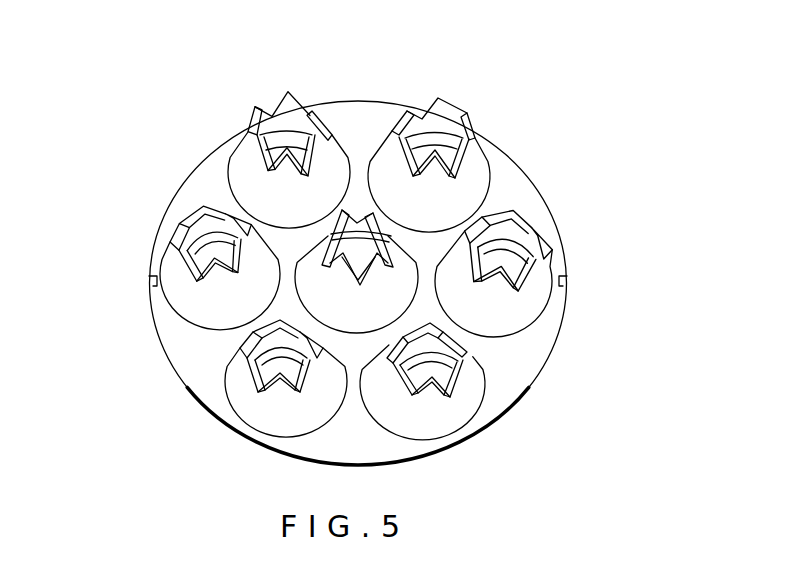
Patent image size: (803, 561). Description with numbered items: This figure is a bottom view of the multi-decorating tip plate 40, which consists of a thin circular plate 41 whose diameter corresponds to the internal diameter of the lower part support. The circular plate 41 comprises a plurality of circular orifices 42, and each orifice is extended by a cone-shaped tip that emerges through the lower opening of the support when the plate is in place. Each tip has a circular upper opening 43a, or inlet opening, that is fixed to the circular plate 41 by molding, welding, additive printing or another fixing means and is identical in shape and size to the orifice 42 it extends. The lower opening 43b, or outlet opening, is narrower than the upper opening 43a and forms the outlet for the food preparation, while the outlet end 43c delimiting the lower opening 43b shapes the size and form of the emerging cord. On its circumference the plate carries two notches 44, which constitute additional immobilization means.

The multi-decorating tip plate 40 is at (507, 142).
The circular plate 41 is at (190, 185).
The circular orifice 42 is at (190, 307).
The upper opening 43a is at (190, 230).
The lower opening 43b is at (287, 120).
The outlet end 43c is at (240, 350).
The notch 44 is at (150, 282).